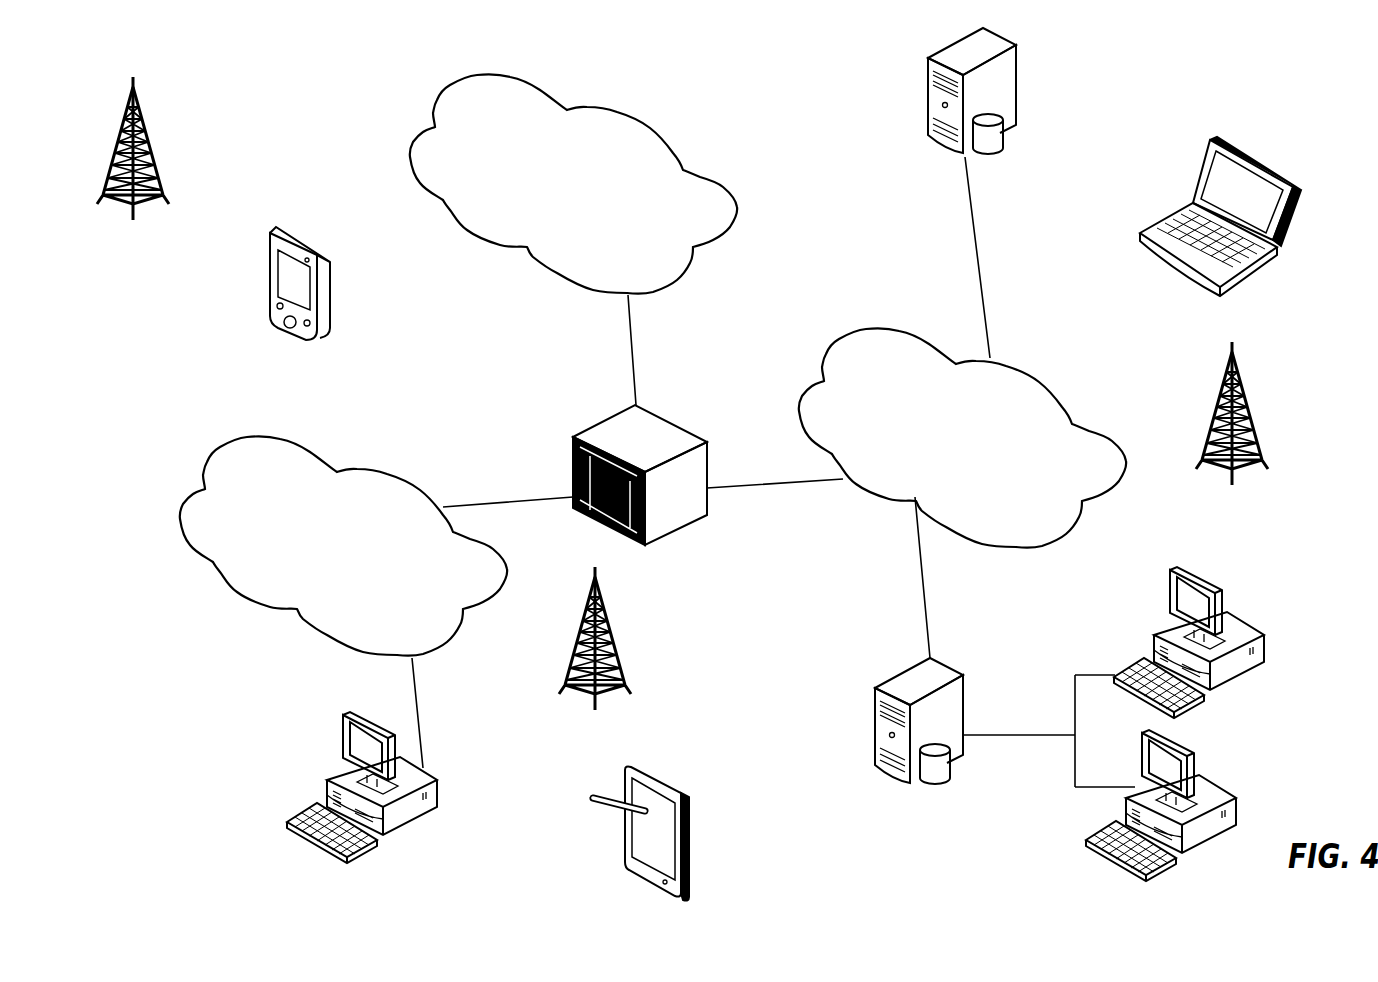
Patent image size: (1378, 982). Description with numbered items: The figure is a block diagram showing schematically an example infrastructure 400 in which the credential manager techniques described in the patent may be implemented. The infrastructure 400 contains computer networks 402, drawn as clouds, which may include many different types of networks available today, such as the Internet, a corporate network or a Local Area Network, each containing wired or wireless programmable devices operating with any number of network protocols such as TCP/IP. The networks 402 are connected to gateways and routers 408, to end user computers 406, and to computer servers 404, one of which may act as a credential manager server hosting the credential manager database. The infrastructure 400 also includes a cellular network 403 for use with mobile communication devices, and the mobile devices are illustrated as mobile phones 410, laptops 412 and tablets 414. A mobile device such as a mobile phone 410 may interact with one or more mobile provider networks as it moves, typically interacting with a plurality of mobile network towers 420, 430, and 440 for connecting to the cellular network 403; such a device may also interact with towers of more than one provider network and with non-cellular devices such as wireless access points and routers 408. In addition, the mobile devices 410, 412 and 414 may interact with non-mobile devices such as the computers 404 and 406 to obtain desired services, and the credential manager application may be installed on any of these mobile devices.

The infrastructure 400 is at (1117, 131).
The computer networks 402 is at (320, 455).
The cellular network 403 is at (620, 110).
The computer servers 404 is at (928, 82).
The end user computers 406 is at (437, 780).
The gateways and routers 408 is at (668, 420).
The mobile phones 410 is at (305, 238).
The laptops 412 is at (1265, 170).
The tablets 414 is at (668, 780).
The mobile network tower 420 is at (595, 657).
The mobile network tower 430 is at (1232, 430).
The mobile network tower 440 is at (133, 166).